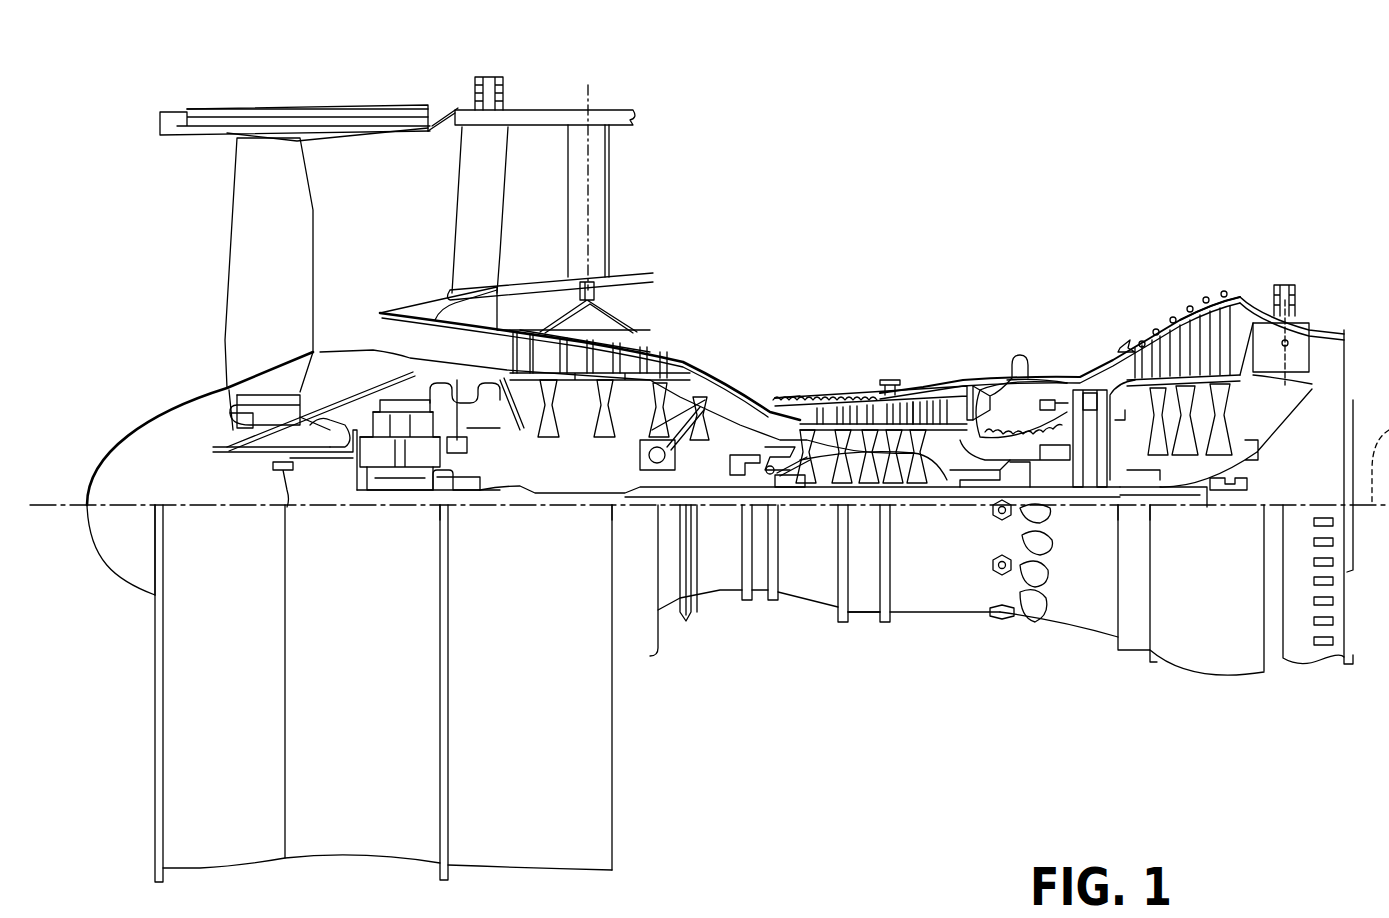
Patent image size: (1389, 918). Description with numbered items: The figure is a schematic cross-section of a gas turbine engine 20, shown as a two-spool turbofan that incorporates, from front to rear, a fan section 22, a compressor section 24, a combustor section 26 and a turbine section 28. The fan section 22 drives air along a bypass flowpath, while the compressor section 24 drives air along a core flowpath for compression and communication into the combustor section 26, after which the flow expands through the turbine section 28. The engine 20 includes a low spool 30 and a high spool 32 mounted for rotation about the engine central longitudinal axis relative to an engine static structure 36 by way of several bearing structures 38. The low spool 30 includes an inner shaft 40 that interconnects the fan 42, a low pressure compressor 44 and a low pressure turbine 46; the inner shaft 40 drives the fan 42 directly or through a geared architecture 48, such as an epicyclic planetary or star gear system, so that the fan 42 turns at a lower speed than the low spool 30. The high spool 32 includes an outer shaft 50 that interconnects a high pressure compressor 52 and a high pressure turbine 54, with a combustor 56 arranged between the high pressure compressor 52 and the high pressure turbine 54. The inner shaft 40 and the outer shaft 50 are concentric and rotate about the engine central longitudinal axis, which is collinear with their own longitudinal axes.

The gas turbine engine 20 is at (1093, 188).
The fan section 22 is at (445, 85).
The compressor section 24 is at (900, 240).
The combustor section 26 is at (900, 240).
The turbine section 28 is at (1025, 240).
The low spool 30 is at (707, 457).
The high spool 32 is at (935, 412).
The engine static structure 36 is at (866, 622).
The bearing structures 38 is at (197, 580).
The inner shaft 40 is at (1057, 495).
The fan 42 is at (257, 290).
The low pressure compressor 44 is at (637, 354).
The low pressure turbine 46 is at (1197, 340).
The geared architecture 48 is at (400, 457).
The outer shaft 50 is at (1067, 473).
The high pressure compressor 52 is at (790, 410).
The high pressure turbine 54 is at (1092, 400).
The combustor 56 is at (1022, 410).